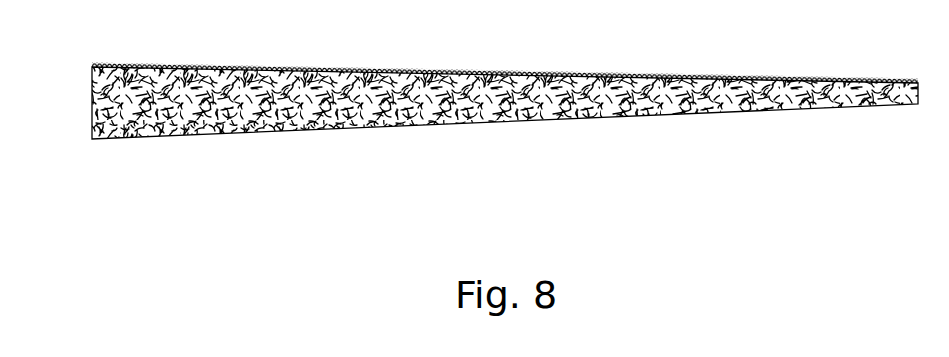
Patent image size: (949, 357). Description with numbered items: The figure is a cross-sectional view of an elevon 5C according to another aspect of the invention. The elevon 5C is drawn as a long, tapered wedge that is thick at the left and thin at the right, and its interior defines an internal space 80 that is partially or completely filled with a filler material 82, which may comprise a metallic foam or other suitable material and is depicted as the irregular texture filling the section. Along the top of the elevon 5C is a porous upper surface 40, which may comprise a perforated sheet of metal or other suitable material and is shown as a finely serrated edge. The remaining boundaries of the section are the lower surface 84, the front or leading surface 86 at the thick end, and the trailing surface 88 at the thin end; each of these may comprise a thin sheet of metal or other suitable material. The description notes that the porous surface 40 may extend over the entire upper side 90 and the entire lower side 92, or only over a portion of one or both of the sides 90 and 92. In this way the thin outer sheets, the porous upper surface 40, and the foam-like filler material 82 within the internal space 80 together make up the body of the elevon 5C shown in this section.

The porous upper surface 40 is at (693, 78).
The internal space 80 is at (657, 112).
The filler material 82 is at (577, 115).
The lower surface 84 is at (453, 123).
The front/leading surface 86 is at (100, 102).
The trailing surface 88 is at (925, 88).
The upper side 90 is at (430, 72).
The lower side 92 is at (375, 125).
The elevon 5C is at (815, 116).